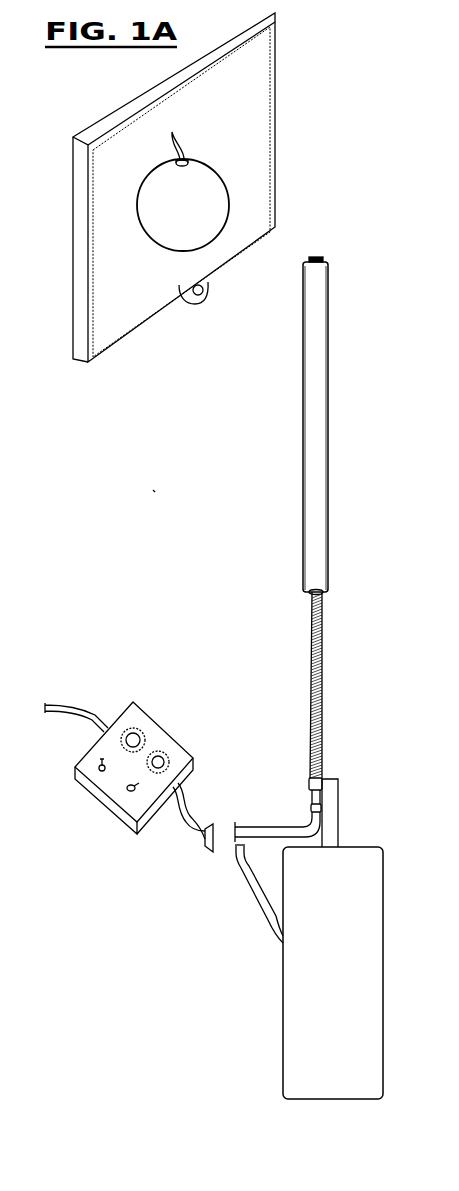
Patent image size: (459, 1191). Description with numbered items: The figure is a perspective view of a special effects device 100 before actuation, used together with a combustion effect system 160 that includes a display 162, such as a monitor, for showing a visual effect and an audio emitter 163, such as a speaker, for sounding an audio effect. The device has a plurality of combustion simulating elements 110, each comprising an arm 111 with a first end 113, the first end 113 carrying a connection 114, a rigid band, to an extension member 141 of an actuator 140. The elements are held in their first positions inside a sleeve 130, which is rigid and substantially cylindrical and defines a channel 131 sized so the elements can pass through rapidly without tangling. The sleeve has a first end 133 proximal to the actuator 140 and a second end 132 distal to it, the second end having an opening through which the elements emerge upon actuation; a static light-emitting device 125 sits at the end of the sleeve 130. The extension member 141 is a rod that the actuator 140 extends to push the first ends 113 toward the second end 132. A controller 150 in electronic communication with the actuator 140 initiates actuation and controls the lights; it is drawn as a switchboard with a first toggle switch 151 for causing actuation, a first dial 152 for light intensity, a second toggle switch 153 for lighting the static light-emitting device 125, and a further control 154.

The special effects device 100 is at (153, 492).
The combustion simulating elements 110 is at (342, 668).
The arm 111 is at (312, 650).
The first end 113 is at (313, 800).
The connection 114 is at (322, 775).
The static light-emitting device 125 is at (320, 253).
The sleeve 130 is at (338, 410).
The channel 131 is at (323, 593).
The second end 132 is at (328, 268).
The first end 133 is at (303, 568).
The actuator 140 is at (367, 992).
The extension member 141 is at (340, 797).
The controller 150 is at (113, 803).
The first toggle switch 151 is at (97, 770).
The first dial 152 is at (128, 732).
The second toggle switch 153 is at (132, 797).
The second control knob 154 is at (172, 767).
The combustion effect system 160 is at (287, 97).
The display 162 is at (253, 160).
The audio emitter 163 is at (198, 302).